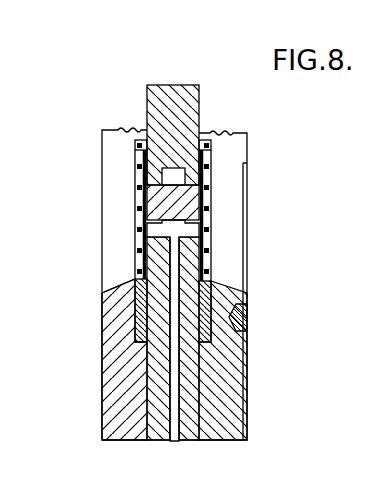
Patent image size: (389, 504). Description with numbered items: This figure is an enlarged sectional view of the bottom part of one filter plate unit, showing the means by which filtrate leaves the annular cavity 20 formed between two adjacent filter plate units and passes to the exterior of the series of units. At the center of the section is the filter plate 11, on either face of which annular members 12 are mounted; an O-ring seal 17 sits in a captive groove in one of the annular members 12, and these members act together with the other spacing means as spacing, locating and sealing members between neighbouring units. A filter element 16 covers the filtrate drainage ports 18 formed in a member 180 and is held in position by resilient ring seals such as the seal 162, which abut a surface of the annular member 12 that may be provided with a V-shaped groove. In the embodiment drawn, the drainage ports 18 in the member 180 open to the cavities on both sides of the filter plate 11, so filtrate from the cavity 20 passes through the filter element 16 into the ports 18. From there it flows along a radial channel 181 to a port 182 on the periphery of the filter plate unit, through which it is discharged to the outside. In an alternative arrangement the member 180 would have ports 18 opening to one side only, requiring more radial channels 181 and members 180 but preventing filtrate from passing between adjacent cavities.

The filter plate 11 is at (175, 103).
The annular member 12 is at (108, 338).
The filter element 16 is at (214, 188).
The O-ring seal 17 is at (247, 326).
The filtrate drainage port 18 is at (153, 177).
The annular cavity 20 is at (108, 148).
The resilient ring seal 162 is at (130, 303).
The member 180 is at (158, 202).
The radial channel 181 is at (172, 392).
The port 182 is at (172, 441).